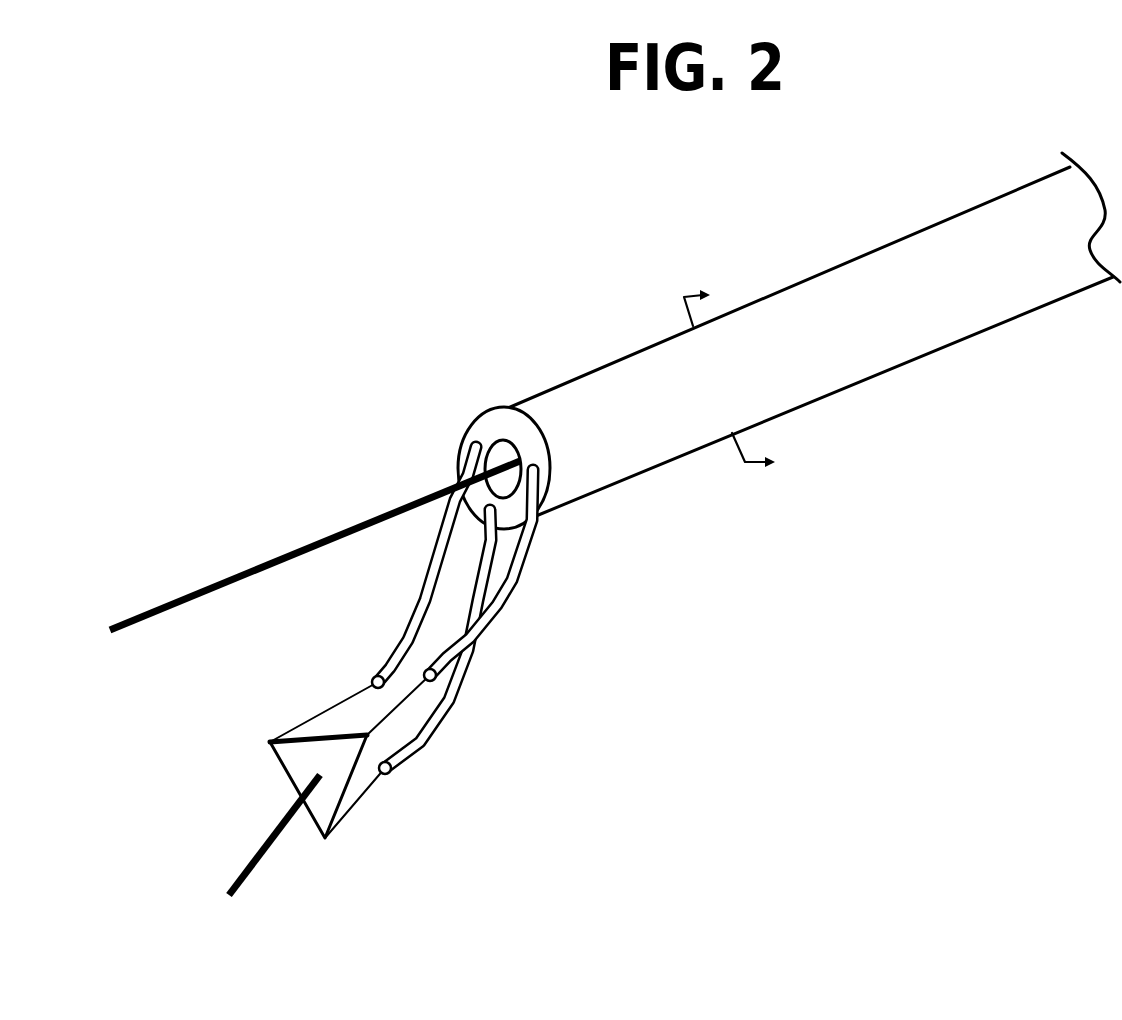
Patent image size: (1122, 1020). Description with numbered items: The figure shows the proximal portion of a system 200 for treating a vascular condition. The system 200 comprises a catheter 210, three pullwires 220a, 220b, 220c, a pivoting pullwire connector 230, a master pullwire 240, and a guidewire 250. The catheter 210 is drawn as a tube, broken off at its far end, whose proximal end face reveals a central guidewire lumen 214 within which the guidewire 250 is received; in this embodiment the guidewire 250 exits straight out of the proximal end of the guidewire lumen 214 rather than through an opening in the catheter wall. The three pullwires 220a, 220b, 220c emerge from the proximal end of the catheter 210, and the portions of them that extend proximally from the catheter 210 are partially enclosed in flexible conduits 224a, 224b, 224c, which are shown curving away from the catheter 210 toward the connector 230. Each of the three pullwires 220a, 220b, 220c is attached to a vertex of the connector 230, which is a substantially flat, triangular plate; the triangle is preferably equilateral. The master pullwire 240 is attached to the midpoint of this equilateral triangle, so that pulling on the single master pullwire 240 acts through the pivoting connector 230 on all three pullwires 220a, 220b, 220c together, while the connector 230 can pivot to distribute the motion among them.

The system 200 is at (135, 171).
The catheter 210 is at (618, 360).
The central guidewire lumen 214 is at (507, 483).
The pullwire 220a is at (286, 733).
The pullwire 220b is at (365, 793).
The pullwire 220c is at (372, 730).
The flexible conduit 224a is at (423, 617).
The flexible conduit 224b is at (423, 733).
The flexible conduit 224c is at (492, 612).
The pivoting pullwire connector 230 is at (305, 770).
The master pullwire 240 is at (250, 877).
The guidewire 250 is at (285, 553).